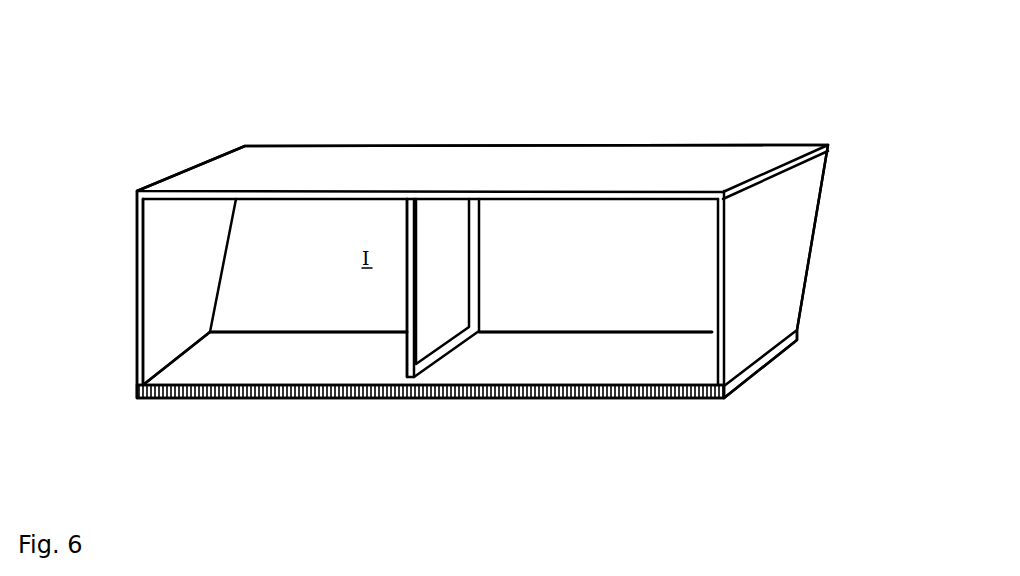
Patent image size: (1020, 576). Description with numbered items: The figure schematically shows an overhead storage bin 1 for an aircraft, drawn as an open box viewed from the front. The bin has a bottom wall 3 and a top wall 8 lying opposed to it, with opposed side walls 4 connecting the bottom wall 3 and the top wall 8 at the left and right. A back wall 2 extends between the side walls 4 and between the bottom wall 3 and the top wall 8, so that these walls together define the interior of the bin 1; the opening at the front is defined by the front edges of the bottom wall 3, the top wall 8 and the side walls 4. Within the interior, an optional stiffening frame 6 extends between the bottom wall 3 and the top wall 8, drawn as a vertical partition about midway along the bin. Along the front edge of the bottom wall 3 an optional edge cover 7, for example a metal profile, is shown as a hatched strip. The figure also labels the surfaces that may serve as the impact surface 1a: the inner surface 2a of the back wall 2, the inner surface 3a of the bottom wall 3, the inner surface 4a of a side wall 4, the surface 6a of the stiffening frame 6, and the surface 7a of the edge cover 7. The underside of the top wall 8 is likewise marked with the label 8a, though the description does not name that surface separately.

The overhead storage bin 1 is at (747, 96).
The back wall 2 is at (616, 232).
The bottom wall 3 is at (672, 366).
The side walls 4 is at (138, 290).
The stiffening frame 6 is at (416, 245).
The edge cover 7 is at (663, 392).
The top wall 8 is at (354, 174).
The inner surface of top wall 8a is at (296, 205).
The impact surface 1a is at (427, 358).
The inner surface of the back wall 2a is at (534, 253).
The inner surface of the bottom wall 3a is at (262, 362).
The inner surface of the side wall 4a is at (164, 324).
The surface of the stiffening frame 6a is at (403, 339).
The surface of the edge cover 7a is at (629, 393).